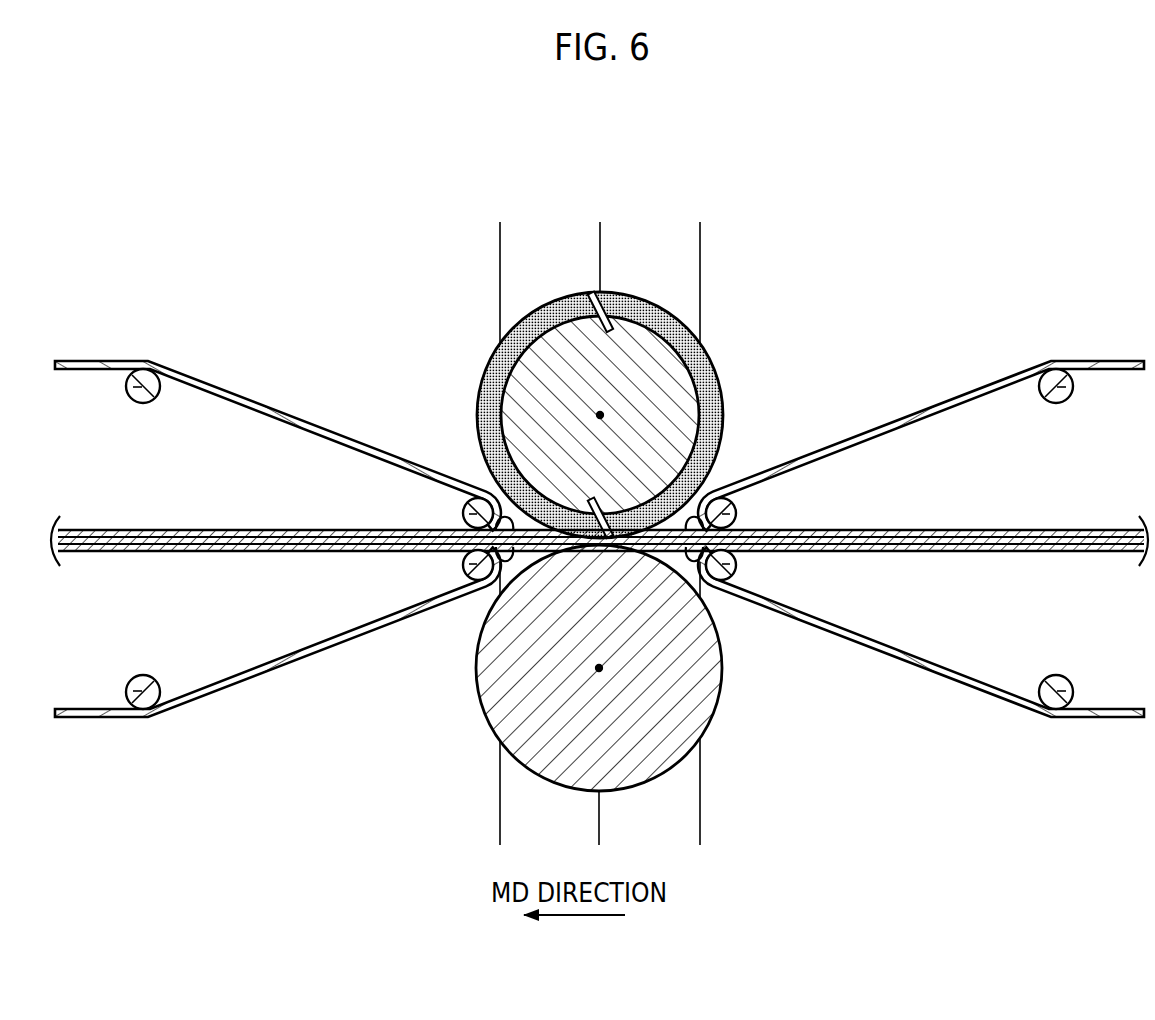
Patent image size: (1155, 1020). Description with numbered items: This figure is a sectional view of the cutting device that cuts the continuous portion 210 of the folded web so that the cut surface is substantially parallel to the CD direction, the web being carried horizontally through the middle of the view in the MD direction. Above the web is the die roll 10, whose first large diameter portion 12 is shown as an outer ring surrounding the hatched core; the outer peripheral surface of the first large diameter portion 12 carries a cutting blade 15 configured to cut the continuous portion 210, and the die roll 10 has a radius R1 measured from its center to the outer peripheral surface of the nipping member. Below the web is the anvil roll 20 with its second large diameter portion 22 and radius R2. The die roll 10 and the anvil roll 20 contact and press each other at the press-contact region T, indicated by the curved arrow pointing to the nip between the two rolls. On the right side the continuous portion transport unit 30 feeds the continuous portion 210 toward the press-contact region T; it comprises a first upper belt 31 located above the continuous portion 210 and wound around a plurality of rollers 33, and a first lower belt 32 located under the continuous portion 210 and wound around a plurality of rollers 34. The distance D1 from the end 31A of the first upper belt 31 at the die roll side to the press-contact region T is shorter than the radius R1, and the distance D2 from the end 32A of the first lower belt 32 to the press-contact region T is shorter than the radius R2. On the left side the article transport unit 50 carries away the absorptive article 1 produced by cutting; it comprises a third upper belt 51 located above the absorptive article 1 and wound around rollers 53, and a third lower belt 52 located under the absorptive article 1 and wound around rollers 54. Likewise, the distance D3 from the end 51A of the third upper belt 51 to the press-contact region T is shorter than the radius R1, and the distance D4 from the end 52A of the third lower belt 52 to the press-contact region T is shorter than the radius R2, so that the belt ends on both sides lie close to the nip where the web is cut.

The absorptive article 1 is at (599, 513).
The die roll 10 is at (576, 387).
The first large diameter portion 12 is at (600, 415).
The cutting blade 15 is at (598, 293).
The anvil roll 20 is at (584, 668).
The second large diameter portion 22 is at (718, 707).
The continuous portion transport unit 30 is at (915, 424).
The first upper belt 31 is at (884, 428).
The end of the first upper belt 31A is at (740, 524).
The first lower belt 32 is at (907, 663).
The end of the first lower belt 32A is at (740, 556).
The rollers 33 is at (1045, 398).
The rollers 34 is at (1040, 680).
The article transport unit 50 is at (284, 424).
The third upper belt 51 is at (247, 395).
The end of the third upper belt 51A is at (462, 524).
The third lower belt 52 is at (287, 667).
The end of the third lower belt 52A is at (462, 557).
The rollers 53 is at (157, 397).
The rollers 54 is at (158, 680).
The continuous portion 210 is at (1110, 530).
The press-contact region T is at (597, 548).
The radius of the die roll R1 is at (722, 415).
The radius of the anvil roll R2 is at (721, 668).
The distance from end 31A to press-contact region D1 is at (699, 232).
The distance from end 32A to press-contact region D2 is at (699, 835).
The distance from end 51A to press-contact region D3 is at (501, 232).
The distance from end 52A to press-contact region D4 is at (501, 835).